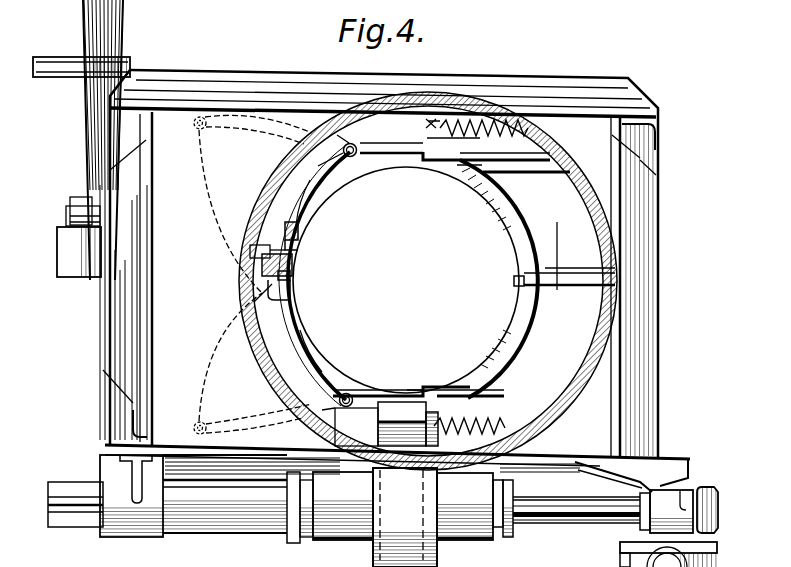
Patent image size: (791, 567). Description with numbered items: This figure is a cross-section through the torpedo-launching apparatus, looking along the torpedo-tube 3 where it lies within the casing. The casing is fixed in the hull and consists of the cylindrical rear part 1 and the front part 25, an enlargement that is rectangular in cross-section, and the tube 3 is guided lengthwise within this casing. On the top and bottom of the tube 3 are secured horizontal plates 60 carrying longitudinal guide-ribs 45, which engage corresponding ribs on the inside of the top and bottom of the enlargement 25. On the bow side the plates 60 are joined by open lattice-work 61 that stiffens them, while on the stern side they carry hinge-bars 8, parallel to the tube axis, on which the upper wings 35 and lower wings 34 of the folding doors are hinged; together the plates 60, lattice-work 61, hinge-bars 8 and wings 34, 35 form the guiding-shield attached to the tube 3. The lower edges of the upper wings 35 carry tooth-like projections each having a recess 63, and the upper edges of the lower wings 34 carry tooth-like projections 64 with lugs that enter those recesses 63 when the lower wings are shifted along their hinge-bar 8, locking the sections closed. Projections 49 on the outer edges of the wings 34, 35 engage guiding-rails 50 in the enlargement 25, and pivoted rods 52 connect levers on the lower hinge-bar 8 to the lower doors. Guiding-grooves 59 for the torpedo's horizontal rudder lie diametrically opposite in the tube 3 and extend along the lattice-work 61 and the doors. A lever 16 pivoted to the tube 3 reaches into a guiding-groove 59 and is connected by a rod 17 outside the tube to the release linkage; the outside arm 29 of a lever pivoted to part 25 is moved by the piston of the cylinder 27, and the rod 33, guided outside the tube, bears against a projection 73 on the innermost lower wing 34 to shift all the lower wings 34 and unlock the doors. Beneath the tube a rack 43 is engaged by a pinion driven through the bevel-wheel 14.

The rear or inner part of torpedo-tube casing 1 is at (590, 370).
The torpedo-tube 3 is at (512, 245).
The hinge-bars 8 is at (350, 170).
The bevel-wheel 14 is at (712, 493).
The lever 16 is at (292, 256).
The rod 17 is at (300, 236).
The front or outer part of torpedo-tube casing 25 is at (156, 350).
The cylinder 27 is at (122, 28).
The outside arm of lever 29 is at (66, 212).
The rod 33 is at (250, 268).
The lower halves or wings of folding doors 34 is at (308, 346).
The upper halves or wings of folding doors 35 is at (312, 196).
The rack 43 is at (395, 420).
The guide-ribs 45 is at (424, 123).
The projections 49 is at (316, 136).
The guiding-rails 50 is at (350, 427).
The pivoted rods 52 is at (244, 389).
The guiding-grooves 59 is at (292, 275).
The horizontal plates 60 is at (366, 142).
The open lattice-work 61 is at (532, 164).
The recess 63 is at (194, 130).
The tooth-like projections 64 is at (194, 422).
The projection 73 is at (256, 305).